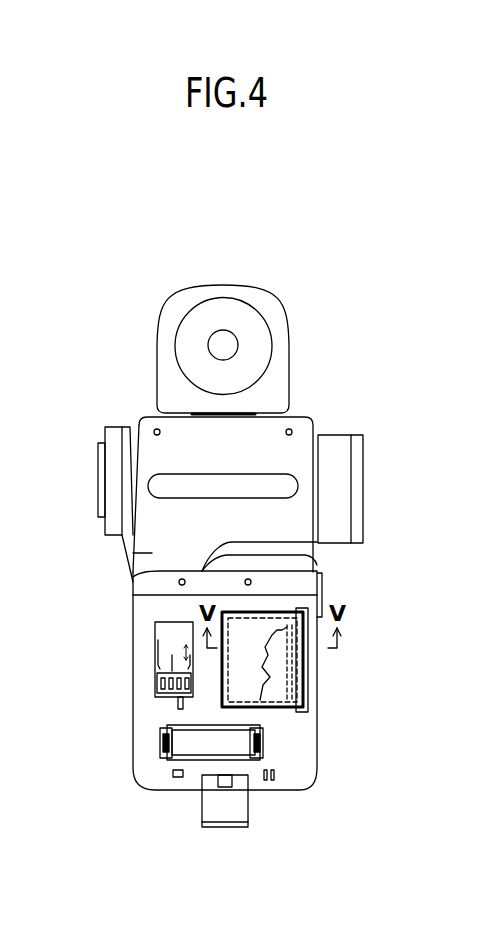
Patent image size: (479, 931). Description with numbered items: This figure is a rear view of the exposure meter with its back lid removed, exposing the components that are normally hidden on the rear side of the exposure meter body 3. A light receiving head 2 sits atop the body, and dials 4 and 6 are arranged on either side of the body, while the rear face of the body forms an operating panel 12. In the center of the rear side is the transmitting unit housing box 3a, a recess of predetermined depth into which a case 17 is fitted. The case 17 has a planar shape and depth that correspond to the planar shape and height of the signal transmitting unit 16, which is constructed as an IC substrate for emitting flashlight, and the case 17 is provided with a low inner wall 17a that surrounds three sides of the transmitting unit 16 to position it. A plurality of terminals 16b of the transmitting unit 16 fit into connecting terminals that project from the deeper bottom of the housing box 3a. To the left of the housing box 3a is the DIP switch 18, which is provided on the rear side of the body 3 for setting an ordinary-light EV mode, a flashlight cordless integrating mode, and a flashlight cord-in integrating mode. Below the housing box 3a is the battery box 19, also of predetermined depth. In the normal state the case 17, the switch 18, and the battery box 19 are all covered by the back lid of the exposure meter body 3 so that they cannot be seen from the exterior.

The light receiving portion 2 is at (268, 302).
The exposure meter body 3 is at (307, 420).
The transmitting unit housing box 3a is at (228, 667).
The dial 4 is at (355, 482).
The dial 6 is at (114, 440).
The operation panel 12 is at (320, 603).
The signal transmitting unit 16 is at (275, 690).
The terminals 16b is at (297, 663).
The case 17 is at (242, 625).
The inner wall 17a is at (260, 618).
The DIP switch 18 is at (155, 675).
The battery box 19 is at (172, 760).